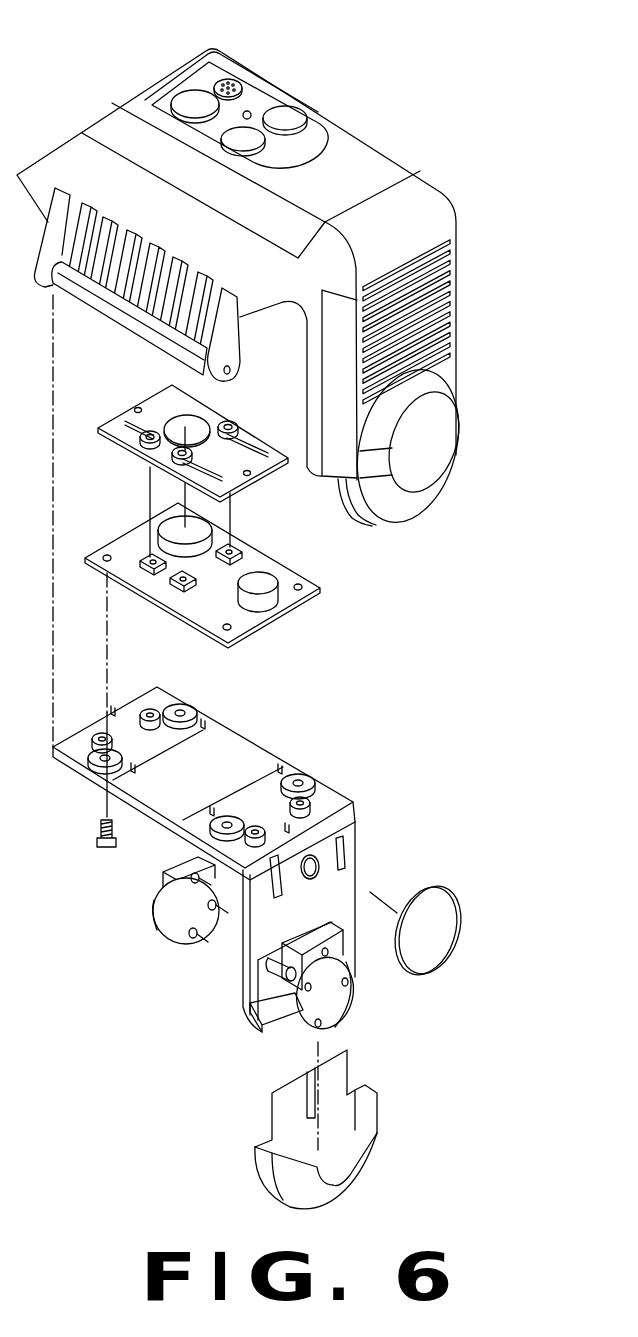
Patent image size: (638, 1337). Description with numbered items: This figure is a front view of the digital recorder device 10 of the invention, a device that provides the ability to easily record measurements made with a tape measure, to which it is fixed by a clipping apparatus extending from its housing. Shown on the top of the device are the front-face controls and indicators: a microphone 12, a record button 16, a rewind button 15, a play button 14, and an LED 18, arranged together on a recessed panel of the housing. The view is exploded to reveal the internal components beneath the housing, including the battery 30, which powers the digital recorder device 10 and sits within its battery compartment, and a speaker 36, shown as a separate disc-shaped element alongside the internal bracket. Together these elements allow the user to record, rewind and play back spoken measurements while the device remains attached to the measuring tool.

The digital recorder device 10 is at (430, 188).
The microphone 12 is at (225, 88).
The play button 14 is at (295, 115).
The rewind button 15 is at (258, 130).
The record button 16 is at (185, 100).
The LED 18 is at (247, 111).
The battery 30 is at (182, 916).
The speaker 36 is at (460, 905).